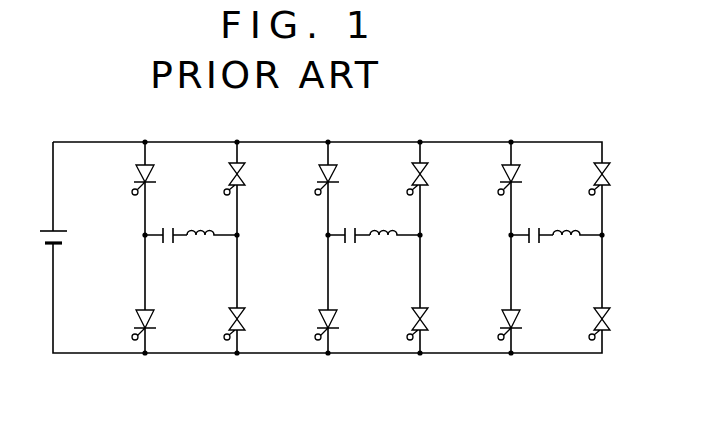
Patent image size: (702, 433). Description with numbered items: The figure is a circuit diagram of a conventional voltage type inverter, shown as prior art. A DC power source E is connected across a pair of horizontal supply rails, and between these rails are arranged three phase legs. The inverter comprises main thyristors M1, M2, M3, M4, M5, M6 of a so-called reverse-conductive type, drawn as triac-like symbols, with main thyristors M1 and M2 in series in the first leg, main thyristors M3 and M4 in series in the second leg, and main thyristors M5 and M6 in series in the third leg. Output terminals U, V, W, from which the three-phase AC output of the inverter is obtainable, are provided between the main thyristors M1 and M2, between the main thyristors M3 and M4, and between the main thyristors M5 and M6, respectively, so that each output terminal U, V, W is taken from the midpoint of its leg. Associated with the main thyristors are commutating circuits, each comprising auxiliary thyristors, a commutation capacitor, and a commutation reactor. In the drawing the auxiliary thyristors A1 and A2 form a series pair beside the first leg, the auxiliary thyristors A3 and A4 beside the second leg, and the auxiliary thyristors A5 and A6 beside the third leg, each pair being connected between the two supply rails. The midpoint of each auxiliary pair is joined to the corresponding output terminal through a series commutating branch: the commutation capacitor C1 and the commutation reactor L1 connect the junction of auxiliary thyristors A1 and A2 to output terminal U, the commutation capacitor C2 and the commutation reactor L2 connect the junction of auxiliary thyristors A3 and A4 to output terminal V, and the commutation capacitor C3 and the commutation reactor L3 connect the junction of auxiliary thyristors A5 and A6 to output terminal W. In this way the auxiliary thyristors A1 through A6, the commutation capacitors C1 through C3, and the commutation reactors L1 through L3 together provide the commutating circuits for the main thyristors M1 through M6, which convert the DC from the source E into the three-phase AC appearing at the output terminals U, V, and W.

The DC power source E is at (68, 237).
The auxiliary thyristor A1 is at (133, 176).
The auxiliary thyristor A2 is at (134, 316).
The auxiliary thyristor A3 is at (322, 174).
The auxiliary thyristor A4 is at (321, 316).
The auxiliary thyristor A5 is at (503, 174).
The auxiliary thyristor A6 is at (503, 316).
The main thyristor M1 is at (226, 174).
The main thyristor M2 is at (229, 317).
The main thyristor M3 is at (413, 174).
The main thyristor M4 is at (412, 317).
The main thyristor M5 is at (594, 174).
The main thyristor M6 is at (594, 317).
The commutation capacitor C1 is at (166, 244).
The commutation capacitor C2 is at (350, 244).
The commutation capacitor C3 is at (534, 244).
The commutation reactor L1 is at (198, 228).
The commutation reactor L2 is at (384, 228).
The commutation reactor L3 is at (566, 228).
The output terminal U is at (255, 235).
The output terminal V is at (435, 235).
The output terminal W is at (615, 235).